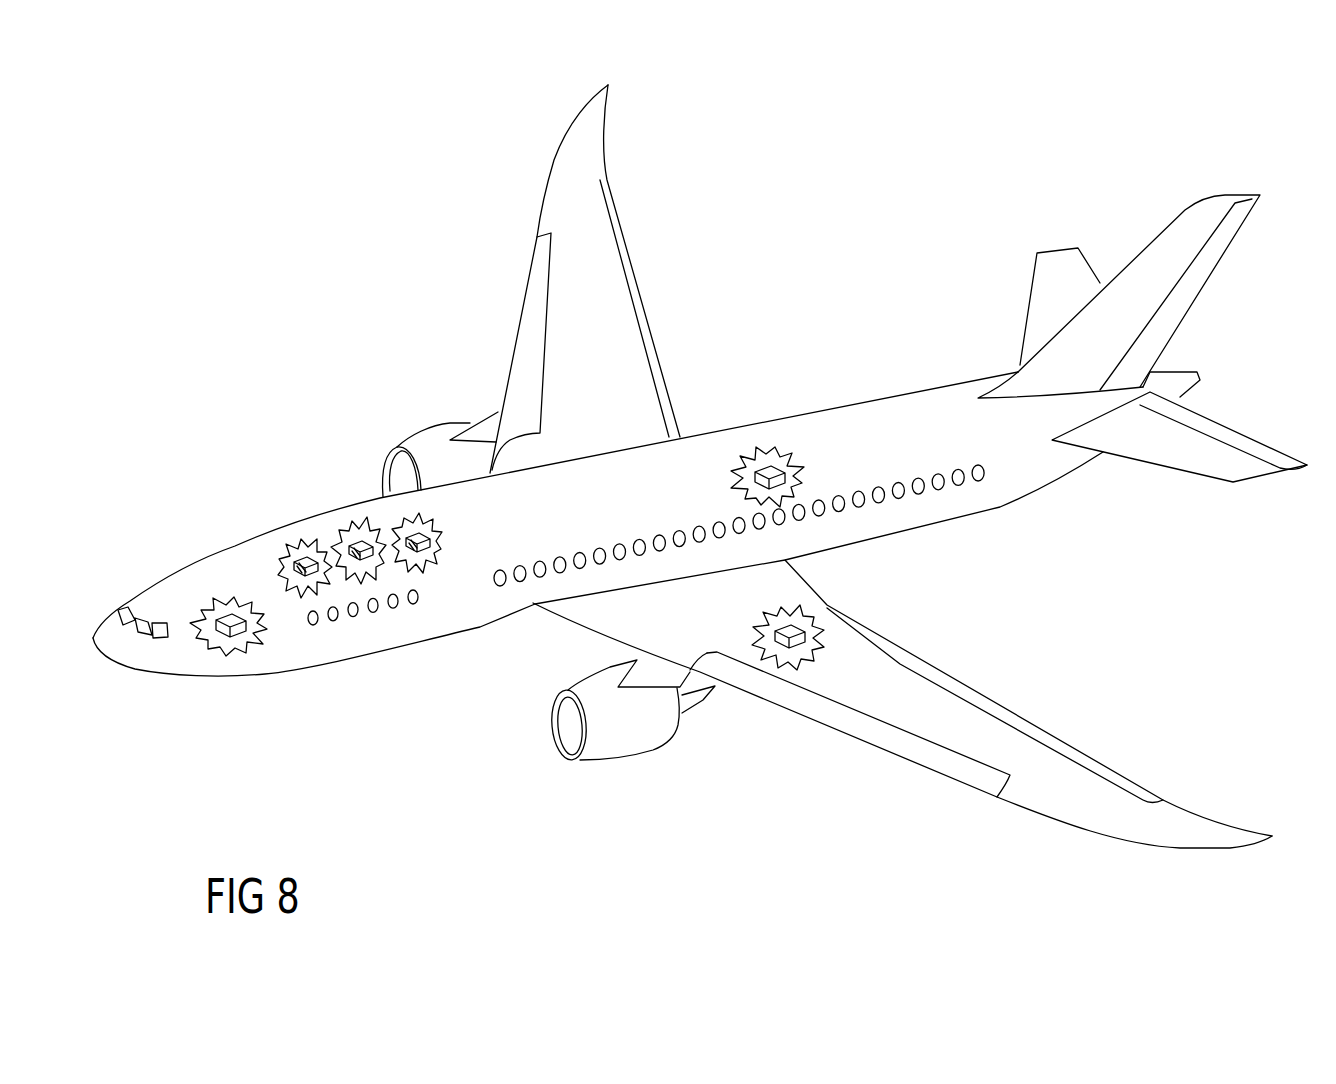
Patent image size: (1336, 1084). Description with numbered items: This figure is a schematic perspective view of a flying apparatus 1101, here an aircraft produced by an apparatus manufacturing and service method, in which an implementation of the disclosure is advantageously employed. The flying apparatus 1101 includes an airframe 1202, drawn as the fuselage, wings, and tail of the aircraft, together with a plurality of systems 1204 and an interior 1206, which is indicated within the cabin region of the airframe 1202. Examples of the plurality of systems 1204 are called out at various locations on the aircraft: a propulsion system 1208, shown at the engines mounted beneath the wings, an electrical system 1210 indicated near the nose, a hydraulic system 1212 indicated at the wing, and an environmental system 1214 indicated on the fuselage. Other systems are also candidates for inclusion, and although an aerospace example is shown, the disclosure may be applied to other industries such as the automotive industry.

The flying apparatus 1101 is at (275, 191).
The airframe 1202 is at (455, 700).
The plurality of systems 1204 is at (881, 358).
The interior 1206 is at (318, 540).
The propulsion system 1208 is at (427, 440).
The electrical system 1210 is at (233, 600).
The hydraulic system 1212 is at (800, 625).
The environmental system 1214 is at (772, 452).